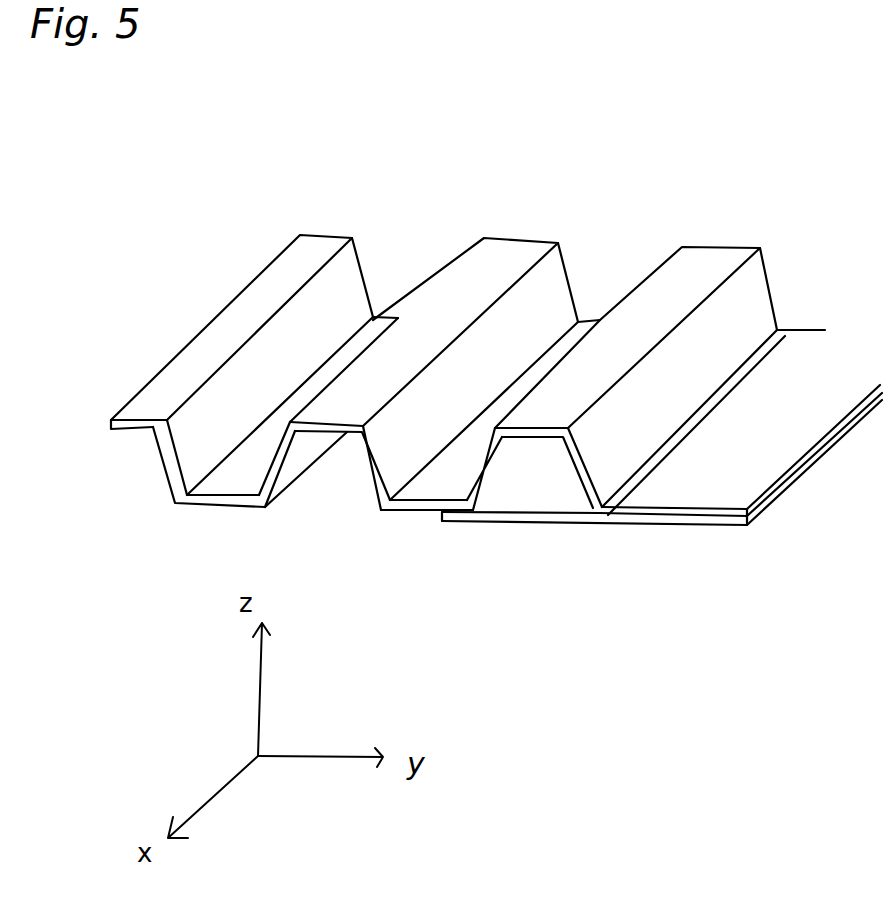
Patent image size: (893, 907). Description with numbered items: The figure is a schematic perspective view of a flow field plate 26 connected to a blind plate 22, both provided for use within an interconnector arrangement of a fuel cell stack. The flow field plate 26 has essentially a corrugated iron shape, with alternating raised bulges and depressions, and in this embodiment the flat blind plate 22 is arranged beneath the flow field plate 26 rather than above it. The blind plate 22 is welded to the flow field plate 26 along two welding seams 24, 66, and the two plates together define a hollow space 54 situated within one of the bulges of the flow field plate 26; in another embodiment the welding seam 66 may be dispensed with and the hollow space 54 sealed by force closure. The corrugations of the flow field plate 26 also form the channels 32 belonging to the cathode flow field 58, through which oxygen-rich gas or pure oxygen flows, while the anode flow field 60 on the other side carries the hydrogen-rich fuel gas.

The blind plate 22 is at (643, 520).
The welding seam 24 is at (686, 433).
The flow field plate 26 is at (670, 297).
The channels 32 is at (348, 490).
The hollow space 54 is at (556, 494).
The cathode flow field 58 is at (350, 568).
The anode flow field 60 is at (442, 216).
The welding seam 66 is at (497, 486).